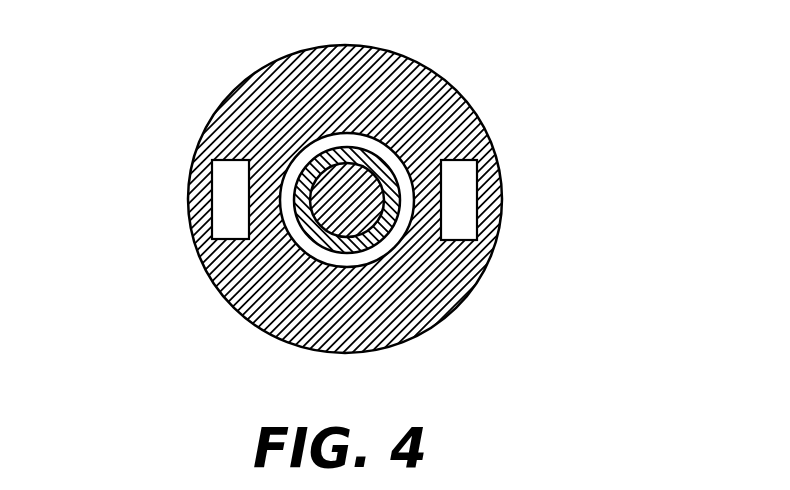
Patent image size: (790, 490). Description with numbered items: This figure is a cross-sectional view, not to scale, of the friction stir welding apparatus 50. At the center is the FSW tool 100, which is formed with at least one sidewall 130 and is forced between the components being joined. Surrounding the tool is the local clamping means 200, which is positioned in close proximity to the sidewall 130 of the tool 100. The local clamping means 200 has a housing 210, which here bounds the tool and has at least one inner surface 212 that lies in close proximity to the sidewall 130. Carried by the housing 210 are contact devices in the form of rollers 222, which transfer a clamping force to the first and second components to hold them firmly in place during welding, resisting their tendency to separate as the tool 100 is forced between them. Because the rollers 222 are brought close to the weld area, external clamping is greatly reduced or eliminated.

The apparatus 50 is at (510, 279).
The FSW tool 100 is at (310, 139).
The sidewall 130 is at (306, 233).
The local clamping means 200 is at (470, 72).
The housing 210 is at (486, 129).
The inner surface 212 is at (278, 192).
The rollers 222 is at (213, 206).